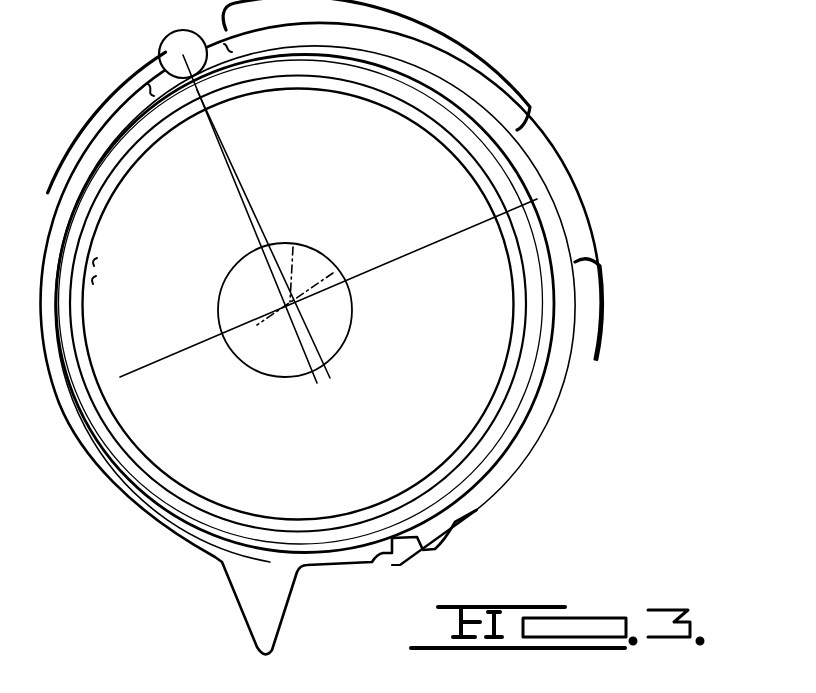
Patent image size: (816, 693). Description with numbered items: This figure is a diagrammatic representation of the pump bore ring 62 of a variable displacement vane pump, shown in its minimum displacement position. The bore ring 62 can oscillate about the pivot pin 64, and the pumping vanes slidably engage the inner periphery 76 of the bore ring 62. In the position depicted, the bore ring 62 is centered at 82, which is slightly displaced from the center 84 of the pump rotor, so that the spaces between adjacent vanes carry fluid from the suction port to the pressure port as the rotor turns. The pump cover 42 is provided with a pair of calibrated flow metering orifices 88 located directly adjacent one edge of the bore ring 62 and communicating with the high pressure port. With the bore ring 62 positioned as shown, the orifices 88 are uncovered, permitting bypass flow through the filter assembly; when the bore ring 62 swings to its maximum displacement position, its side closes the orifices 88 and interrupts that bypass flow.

The pump cover 42 is at (180, 293).
The pump bore ring 62 is at (458, 480).
The pivot pin 64 is at (161, 46).
The inner periphery 76 is at (483, 417).
The center of the bore ring 82 is at (333, 273).
The center of the pump rotor 84 is at (293, 247).
The calibrated flow metering orifices 88 is at (100, 262).